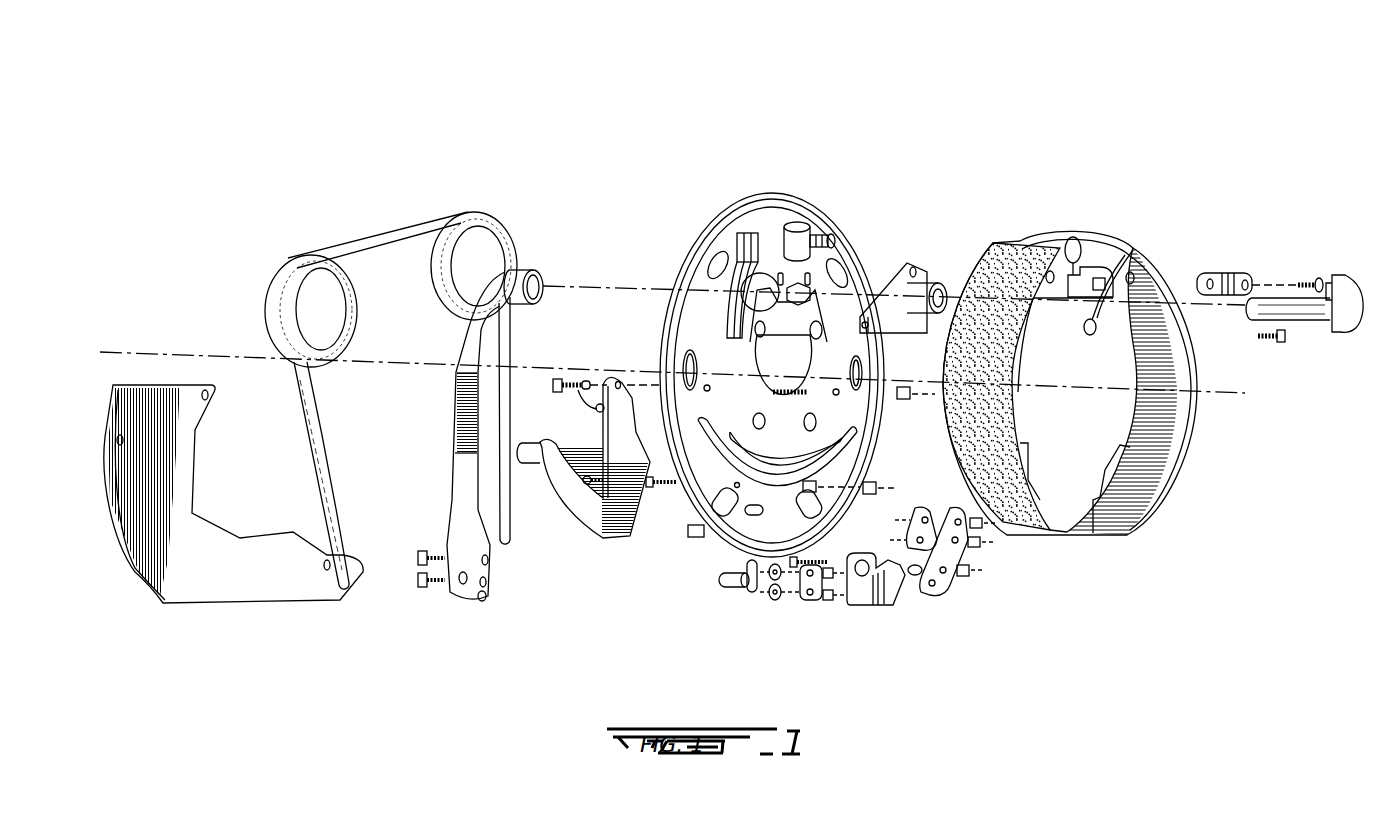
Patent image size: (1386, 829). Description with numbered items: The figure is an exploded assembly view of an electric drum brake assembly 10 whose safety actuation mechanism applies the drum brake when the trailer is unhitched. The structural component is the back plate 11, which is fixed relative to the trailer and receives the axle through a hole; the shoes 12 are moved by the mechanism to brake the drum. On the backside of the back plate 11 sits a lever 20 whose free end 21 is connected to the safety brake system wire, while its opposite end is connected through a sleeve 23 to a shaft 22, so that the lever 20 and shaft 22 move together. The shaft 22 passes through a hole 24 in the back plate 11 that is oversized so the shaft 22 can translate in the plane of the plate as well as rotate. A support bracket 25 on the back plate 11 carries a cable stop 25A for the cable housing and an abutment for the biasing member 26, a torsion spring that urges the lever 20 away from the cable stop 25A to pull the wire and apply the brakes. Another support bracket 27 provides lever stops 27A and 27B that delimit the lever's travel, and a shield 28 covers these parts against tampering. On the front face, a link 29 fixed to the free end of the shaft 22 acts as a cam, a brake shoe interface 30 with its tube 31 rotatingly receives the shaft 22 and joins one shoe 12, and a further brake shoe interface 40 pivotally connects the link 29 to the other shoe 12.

The electric drum brake assembly 10 is at (247, 207).
The back plate 11 is at (723, 217).
The shoes 12 is at (1003, 242).
The lever 20 is at (448, 432).
The free end 21 is at (452, 593).
The shaft 22 is at (1310, 310).
The sleeve 23 is at (520, 267).
The hole 24 is at (727, 292).
The support bracket 25 is at (750, 580).
The cable stop 25A is at (970, 633).
The biasing member 26 is at (384, 237).
The support bracket 27 is at (563, 503).
The lever stop 27A is at (528, 445).
The lever stop 27B is at (573, 378).
The shield 28 is at (247, 583).
The link 29 is at (1352, 272).
The brake shoe interface 30 is at (910, 260).
The tube 31 is at (933, 283).
The brake shoe interface 40 is at (1232, 273).